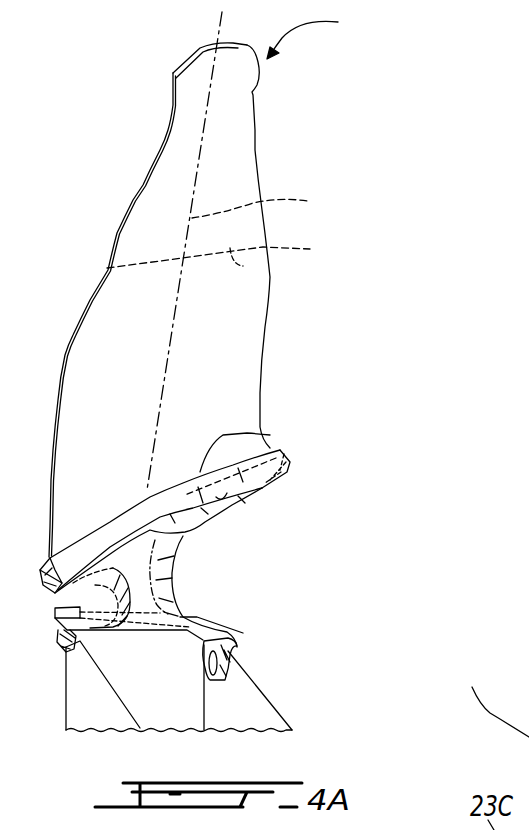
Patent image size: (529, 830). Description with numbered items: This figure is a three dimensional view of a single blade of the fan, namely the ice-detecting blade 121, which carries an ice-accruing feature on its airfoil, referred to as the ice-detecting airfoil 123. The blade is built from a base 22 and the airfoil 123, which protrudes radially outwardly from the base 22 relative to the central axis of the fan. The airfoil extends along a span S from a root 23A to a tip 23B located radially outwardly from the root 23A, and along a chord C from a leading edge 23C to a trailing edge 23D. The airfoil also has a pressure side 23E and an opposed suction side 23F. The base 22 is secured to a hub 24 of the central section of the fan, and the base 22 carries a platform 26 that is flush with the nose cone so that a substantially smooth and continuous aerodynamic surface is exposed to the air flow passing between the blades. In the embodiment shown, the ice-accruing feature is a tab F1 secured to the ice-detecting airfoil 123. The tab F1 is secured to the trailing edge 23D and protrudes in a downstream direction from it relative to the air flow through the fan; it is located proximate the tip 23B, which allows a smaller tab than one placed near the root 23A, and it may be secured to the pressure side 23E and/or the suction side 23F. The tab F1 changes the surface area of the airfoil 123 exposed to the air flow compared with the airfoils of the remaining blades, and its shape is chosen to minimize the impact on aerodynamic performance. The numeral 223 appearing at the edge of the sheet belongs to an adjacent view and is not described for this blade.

The ice-detecting blade 121 is at (394, 223).
The ice-detecting airfoil 123 is at (94, 206).
The root 23A is at (270, 435).
The tip 23B is at (192, 52).
The leading edge 23C is at (92, 298).
The trailing edge 23D is at (253, 92).
The pressure side 23E is at (200, 310).
The suction side 23F is at (171, 112).
The base 22 is at (282, 598).
The hub 24 is at (250, 713).
The platform 26 is at (183, 536).
The span S is at (259, 202).
The chord C is at (218, 251).
The tab F1 is at (315, 32).
The airfoil (adjacent figure) 223 is at (491, 695).